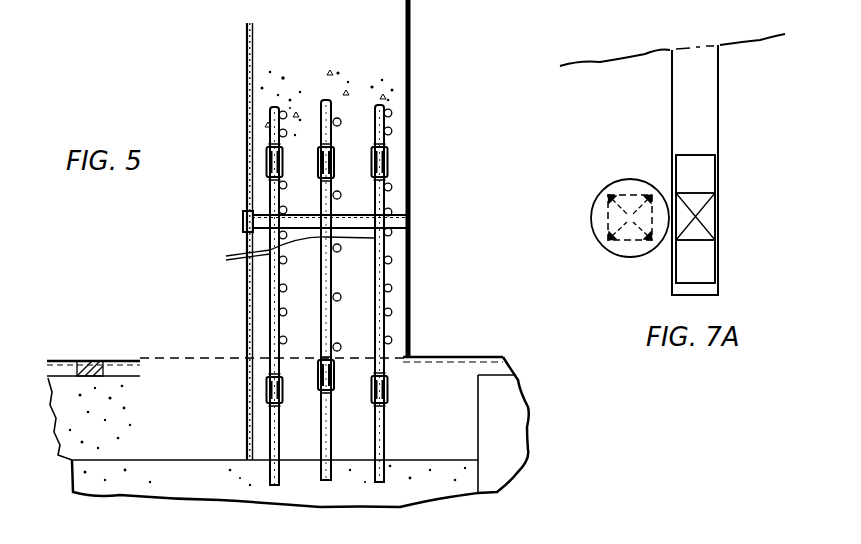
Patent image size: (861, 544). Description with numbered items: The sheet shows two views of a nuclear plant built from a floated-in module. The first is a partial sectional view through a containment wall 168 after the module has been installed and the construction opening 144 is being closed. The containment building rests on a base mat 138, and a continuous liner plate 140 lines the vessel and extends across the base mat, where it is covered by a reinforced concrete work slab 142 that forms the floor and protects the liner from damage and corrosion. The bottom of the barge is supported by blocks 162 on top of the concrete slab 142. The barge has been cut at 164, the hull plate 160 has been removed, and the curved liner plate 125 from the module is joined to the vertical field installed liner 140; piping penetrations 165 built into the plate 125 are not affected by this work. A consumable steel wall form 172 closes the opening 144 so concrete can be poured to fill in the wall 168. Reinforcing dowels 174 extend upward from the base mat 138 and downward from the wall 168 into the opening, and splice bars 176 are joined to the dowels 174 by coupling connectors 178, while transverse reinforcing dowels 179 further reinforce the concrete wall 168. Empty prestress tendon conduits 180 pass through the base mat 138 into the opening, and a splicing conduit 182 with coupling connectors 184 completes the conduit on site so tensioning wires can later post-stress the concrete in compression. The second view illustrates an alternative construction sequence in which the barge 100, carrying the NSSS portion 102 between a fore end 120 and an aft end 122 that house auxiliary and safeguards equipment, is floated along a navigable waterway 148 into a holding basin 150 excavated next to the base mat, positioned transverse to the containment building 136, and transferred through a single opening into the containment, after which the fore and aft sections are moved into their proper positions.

In FIG. 5, the liner plate 140 is at (247, 48).
In FIG. 5, the containment building wall 168 is at (344, 41).
In FIG. 5, the reinforcing dowels 174 is at (375, 106).
In FIG. 5, the coupling connectors 178 is at (372, 158).
In FIG. 5, the coupling connectors 184 is at (318, 168).
In FIG. 5, the transverse reinforcing dowels 179 is at (392, 188).
In FIG. 5, the consumable steel wall form 172 is at (411, 261).
In FIG. 5, the construction opening 144 is at (436, 319).
In FIG. 5, the piping penetrations 165 is at (243, 222).
In FIG. 5, the splice bars 176 is at (283, 251).
In FIG. 5, the liner plate 125 is at (247, 295).
In FIG. 5, the barge cut 164 is at (232, 358).
In FIG. 5, the hull plate 160 is at (127, 356).
In FIG. 5, the blocks 162 is at (78, 380).
In FIG. 5, the reinforced concrete work slab 142 is at (203, 419).
In FIG. 5, the base mat 138 is at (203, 500).
In FIG. 5, the prestress tendon conduits 180 is at (331, 478).
In FIG. 5, the splicing conduit 182 is at (352, 280).
In FIG. 7A, the navigable waterway 148 is at (759, 19).
In FIG. 7A, the holding basin 150 is at (722, 89).
In FIG. 7A, the barge 100 is at (703, 155).
In FIG. 7A, the aft end 122 is at (711, 170).
In FIG. 7A, the NSSS portion 102 is at (713, 204).
In FIG. 7A, the fore end 120 is at (713, 260).
In FIG. 7A, the containment building 136 is at (598, 204).